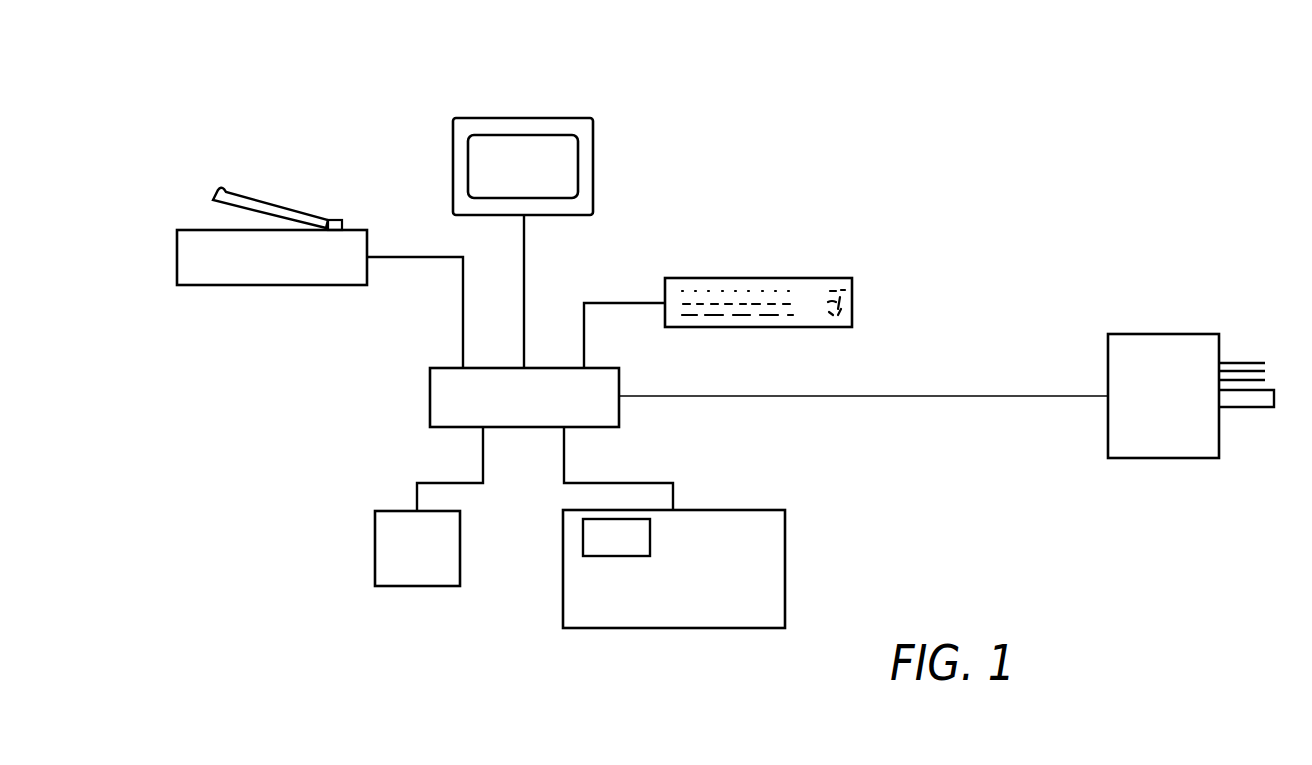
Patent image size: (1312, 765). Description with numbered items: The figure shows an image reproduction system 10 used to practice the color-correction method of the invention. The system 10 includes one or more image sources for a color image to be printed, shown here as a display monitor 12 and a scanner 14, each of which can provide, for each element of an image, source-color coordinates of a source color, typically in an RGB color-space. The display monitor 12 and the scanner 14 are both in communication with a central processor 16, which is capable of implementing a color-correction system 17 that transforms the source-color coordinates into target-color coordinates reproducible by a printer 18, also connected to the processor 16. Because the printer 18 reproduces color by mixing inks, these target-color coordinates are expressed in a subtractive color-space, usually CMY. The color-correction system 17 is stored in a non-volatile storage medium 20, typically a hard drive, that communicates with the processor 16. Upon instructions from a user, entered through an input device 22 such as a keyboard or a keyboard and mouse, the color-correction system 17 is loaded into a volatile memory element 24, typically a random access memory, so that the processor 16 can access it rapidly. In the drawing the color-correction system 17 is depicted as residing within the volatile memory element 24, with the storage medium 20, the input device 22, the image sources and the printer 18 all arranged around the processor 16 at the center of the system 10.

The image reproduction system 10 is at (852, 122).
The display monitor 12 is at (519, 112).
The scanner 14 is at (263, 204).
The processor 16 is at (533, 409).
The color-correction system 17 is at (626, 549).
The printer 18 is at (1159, 333).
The non-volatile storage medium 20 is at (400, 509).
The input device 22 is at (758, 278).
The volatile memory element 24 is at (697, 527).